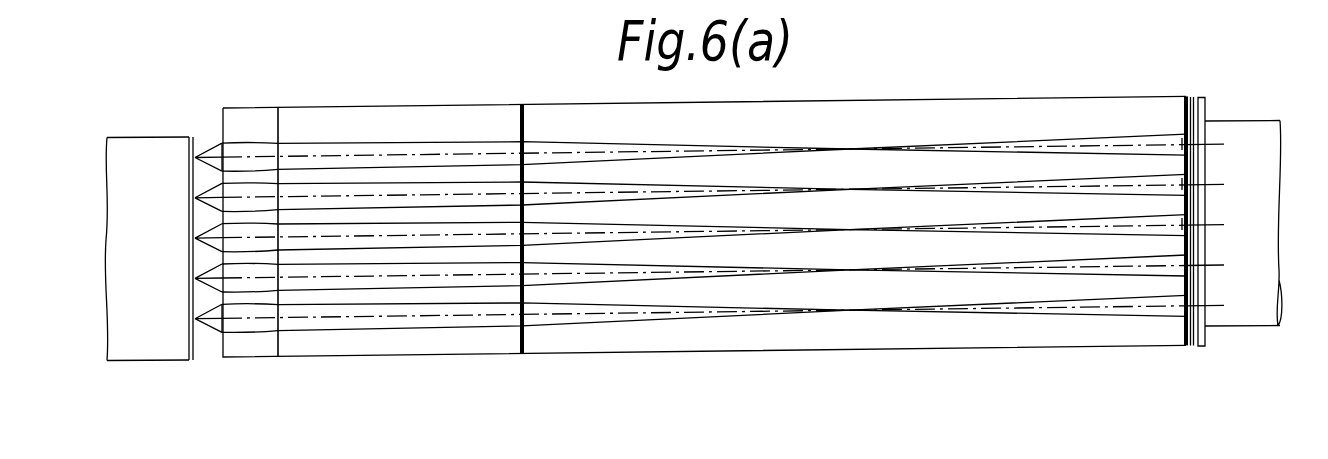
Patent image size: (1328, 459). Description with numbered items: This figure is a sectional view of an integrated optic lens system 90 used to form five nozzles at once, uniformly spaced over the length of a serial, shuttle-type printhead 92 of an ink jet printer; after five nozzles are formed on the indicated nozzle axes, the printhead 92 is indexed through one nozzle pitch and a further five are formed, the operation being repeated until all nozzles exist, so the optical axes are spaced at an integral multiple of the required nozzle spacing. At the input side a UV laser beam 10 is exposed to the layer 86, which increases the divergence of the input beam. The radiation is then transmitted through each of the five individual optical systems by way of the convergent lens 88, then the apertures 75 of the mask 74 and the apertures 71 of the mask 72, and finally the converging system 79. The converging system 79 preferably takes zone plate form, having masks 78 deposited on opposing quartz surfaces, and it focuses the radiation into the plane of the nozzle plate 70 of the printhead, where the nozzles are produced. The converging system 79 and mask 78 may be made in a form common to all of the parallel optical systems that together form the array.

The UV laser beam 10 is at (1280, 120).
The nozzle plate 70 is at (195, 362).
The apertures 71 is at (527, 235).
The mask 72 is at (518, 118).
The mask 74 is at (1182, 328).
The apertures 75 is at (1181, 223).
The masks 78 is at (218, 150).
The converging system 79 is at (262, 360).
The layer 86 is at (1193, 348).
The convergent lens 88 is at (1193, 97).
The integrated optic lens system 90 is at (948, 349).
The printhead 92 is at (150, 362).